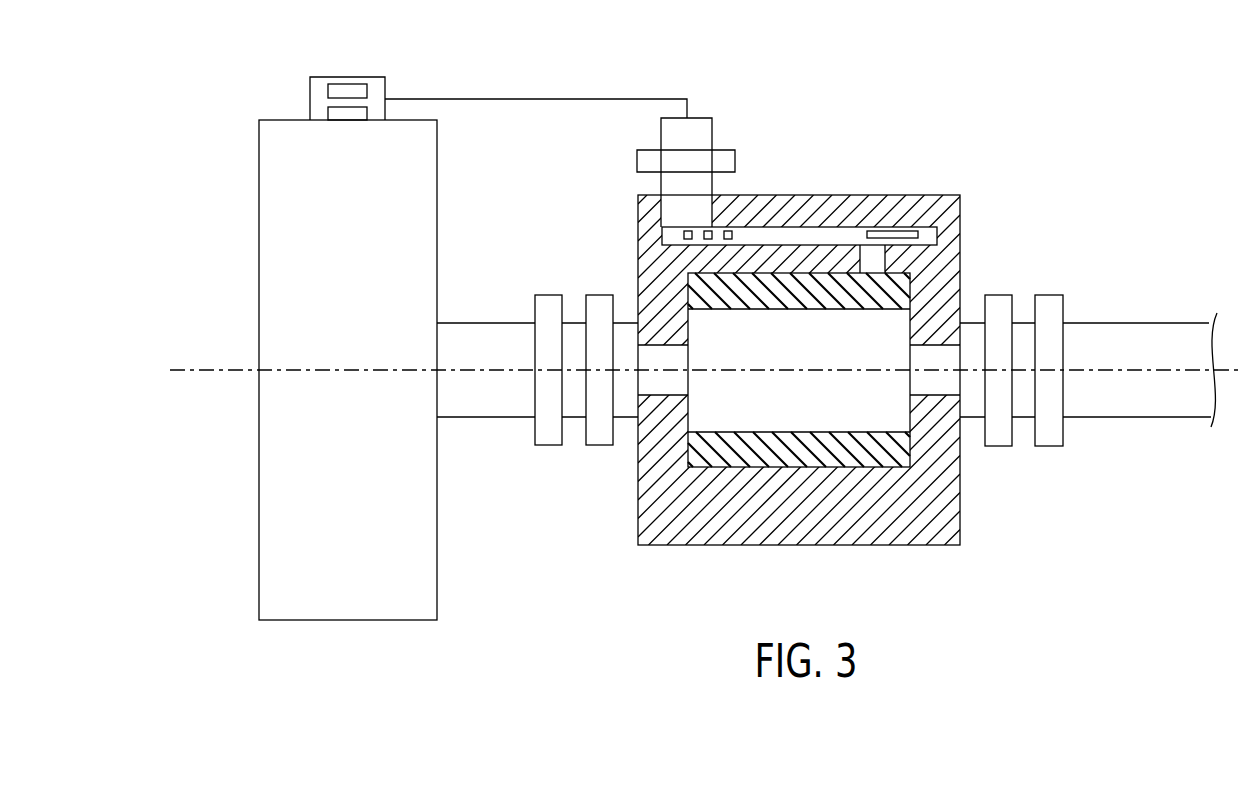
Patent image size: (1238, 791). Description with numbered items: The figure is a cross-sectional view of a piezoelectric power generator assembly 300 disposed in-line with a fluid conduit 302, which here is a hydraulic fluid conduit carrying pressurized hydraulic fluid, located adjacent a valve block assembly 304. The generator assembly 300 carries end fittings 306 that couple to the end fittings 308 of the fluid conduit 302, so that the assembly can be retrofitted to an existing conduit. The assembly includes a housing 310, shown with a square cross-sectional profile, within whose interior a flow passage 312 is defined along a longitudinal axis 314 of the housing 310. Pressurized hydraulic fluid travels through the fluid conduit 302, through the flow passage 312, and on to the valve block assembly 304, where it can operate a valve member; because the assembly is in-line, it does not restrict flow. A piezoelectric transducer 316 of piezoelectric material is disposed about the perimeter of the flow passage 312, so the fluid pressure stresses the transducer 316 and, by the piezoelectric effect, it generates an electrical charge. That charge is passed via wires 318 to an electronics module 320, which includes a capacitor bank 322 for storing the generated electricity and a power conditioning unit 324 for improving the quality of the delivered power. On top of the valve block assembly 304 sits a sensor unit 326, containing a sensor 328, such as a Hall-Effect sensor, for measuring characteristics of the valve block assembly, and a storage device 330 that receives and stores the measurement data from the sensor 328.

The piezoelectric power generator assembly 300 is at (890, 72).
The fluid conduit 302 is at (1163, 323).
The valve block assembly 304 is at (326, 187).
The end fittings 306 is at (598, 295).
The end fittings 308 is at (548, 295).
The housing 310 is at (927, 195).
The flow passage 312 is at (818, 335).
The longitudinal axis 314 is at (723, 368).
The piezoelectric transducer 316 is at (843, 453).
The wires 318 is at (887, 262).
The electronics module 320 is at (778, 225).
The capacitor bank 322 is at (748, 225).
The power conditioning unit 324 is at (902, 228).
The sensor unit 326 is at (310, 98).
The sensor 328 is at (367, 113).
The storage device 330 is at (347, 83).